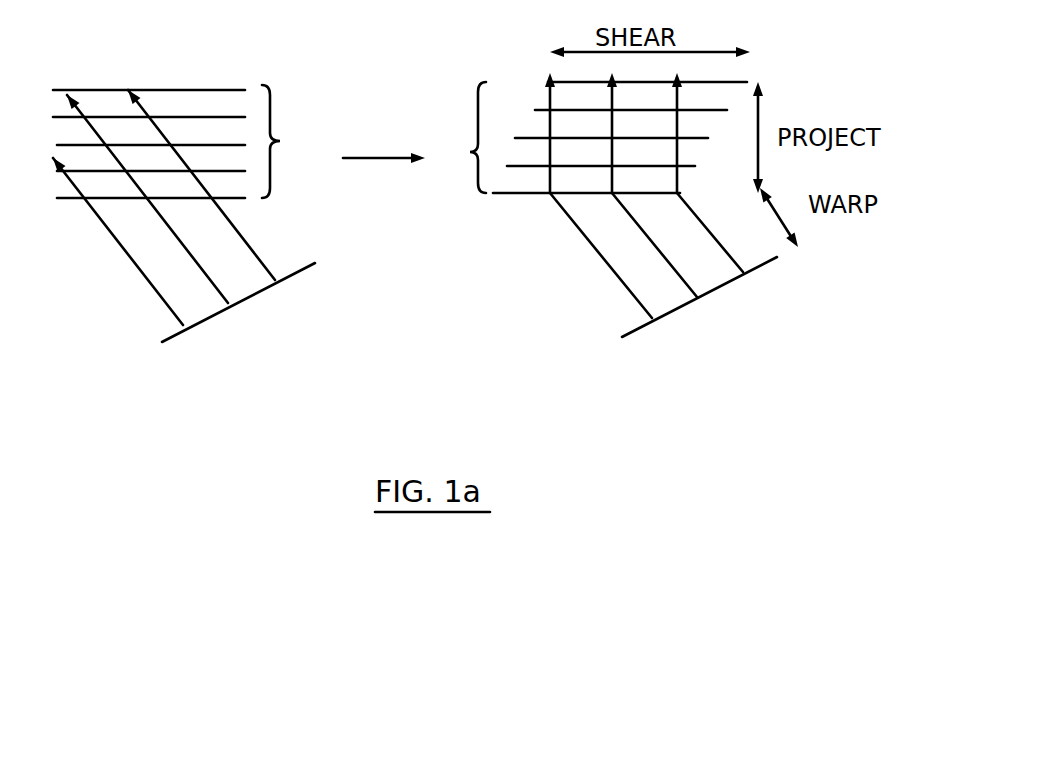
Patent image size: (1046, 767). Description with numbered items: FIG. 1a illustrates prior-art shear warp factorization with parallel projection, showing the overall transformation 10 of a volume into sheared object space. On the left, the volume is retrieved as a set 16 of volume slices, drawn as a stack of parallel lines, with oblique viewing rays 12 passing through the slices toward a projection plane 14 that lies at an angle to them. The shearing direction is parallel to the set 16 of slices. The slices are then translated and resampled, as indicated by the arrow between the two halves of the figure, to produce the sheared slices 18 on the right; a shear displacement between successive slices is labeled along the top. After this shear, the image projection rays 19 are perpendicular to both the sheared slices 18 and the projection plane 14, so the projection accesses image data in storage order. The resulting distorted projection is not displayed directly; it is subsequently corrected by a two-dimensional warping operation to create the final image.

The process 10 is at (362, 49).
The first set of lines 12 is at (232, 245).
The projection plane 14 is at (300, 272).
The set of volume slices 16 is at (273, 162).
The sheared slices 18 is at (470, 152).
The image projection rays 19 is at (548, 100).